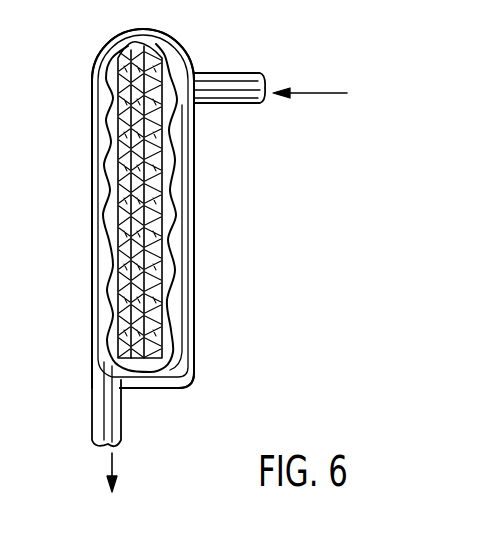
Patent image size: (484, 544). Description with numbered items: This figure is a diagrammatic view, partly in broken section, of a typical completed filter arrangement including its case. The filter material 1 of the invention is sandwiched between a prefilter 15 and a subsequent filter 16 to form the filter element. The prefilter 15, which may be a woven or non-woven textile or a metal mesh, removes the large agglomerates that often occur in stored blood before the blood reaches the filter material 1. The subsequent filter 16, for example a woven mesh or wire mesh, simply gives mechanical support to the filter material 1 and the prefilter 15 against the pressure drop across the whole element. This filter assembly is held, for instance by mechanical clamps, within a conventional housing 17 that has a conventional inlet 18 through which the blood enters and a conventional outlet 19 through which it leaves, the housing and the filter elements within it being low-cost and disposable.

The filter material 1 is at (125, 90).
The prefilter 15 is at (162, 220).
The subsequent filter 16 is at (120, 247).
The housing 17 is at (193, 145).
The inlet 18 is at (240, 84).
The outlet 19 is at (123, 423).